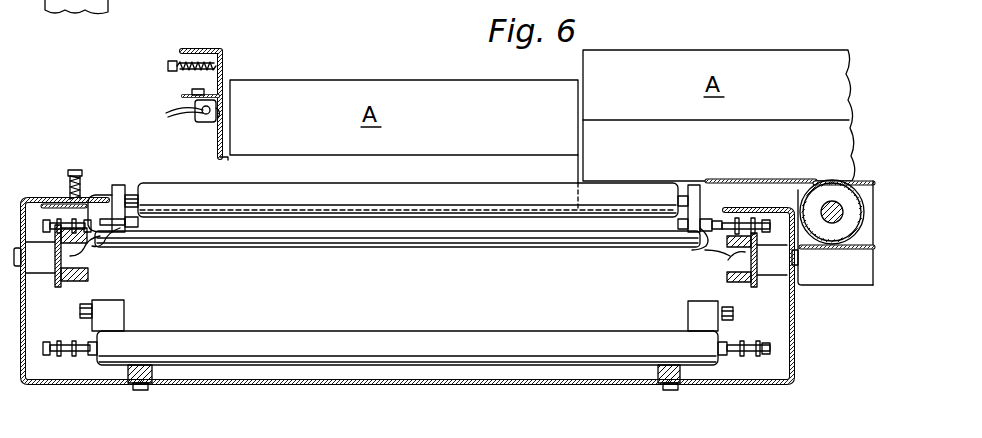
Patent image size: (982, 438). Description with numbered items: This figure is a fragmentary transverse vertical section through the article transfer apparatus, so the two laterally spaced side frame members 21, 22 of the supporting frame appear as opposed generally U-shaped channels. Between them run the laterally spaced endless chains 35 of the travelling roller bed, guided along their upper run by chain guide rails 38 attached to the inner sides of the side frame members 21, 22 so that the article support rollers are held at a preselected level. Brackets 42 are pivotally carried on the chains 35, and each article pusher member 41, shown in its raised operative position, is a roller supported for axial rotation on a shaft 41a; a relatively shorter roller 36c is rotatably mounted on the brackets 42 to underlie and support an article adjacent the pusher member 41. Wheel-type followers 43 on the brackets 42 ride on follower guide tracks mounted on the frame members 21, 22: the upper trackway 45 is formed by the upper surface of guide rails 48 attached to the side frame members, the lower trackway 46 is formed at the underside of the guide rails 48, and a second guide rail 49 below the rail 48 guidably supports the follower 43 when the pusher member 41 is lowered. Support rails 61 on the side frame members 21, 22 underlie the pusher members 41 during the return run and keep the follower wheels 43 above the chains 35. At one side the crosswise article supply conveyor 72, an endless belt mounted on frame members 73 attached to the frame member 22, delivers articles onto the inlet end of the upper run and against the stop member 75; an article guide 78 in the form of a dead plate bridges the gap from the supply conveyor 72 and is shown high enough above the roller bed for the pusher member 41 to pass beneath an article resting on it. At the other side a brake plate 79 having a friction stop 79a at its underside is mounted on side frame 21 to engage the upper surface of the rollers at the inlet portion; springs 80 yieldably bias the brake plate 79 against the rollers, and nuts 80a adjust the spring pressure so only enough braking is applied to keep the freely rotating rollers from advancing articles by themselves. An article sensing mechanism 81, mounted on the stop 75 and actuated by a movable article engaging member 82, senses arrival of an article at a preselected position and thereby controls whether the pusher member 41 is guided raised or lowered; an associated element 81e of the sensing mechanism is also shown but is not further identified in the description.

The side frame member 21 is at (27, 298).
The side frame member 22 is at (797, 331).
The endless chain 35 is at (44, 213).
The roller 36c is at (405, 232).
The chain guide rail 38 is at (763, 258).
The article pusher member 41 is at (484, 186).
The shaft 41a is at (130, 194).
The bracket 42 is at (116, 184).
The follower 43 is at (88, 218).
The upper trackway 45 is at (104, 240).
The lower trackway 46 is at (84, 250).
The guide rail 48 is at (734, 250).
The second guide rail 49 is at (80, 284).
The support rail 61 is at (152, 368).
The article supply conveyor 72 is at (869, 178).
The frame member 73 is at (864, 280).
The stop member 75 is at (199, 51).
The article guide 78 is at (711, 178).
The brake plate 79 is at (97, 196).
The friction stop 79a is at (137, 224).
The spring 80 is at (66, 192).
The nut 80a is at (73, 168).
The article sensing mechanism 81 is at (206, 124).
The switch hook 81e is at (219, 118).
The movable article engaging member 82 is at (223, 153).